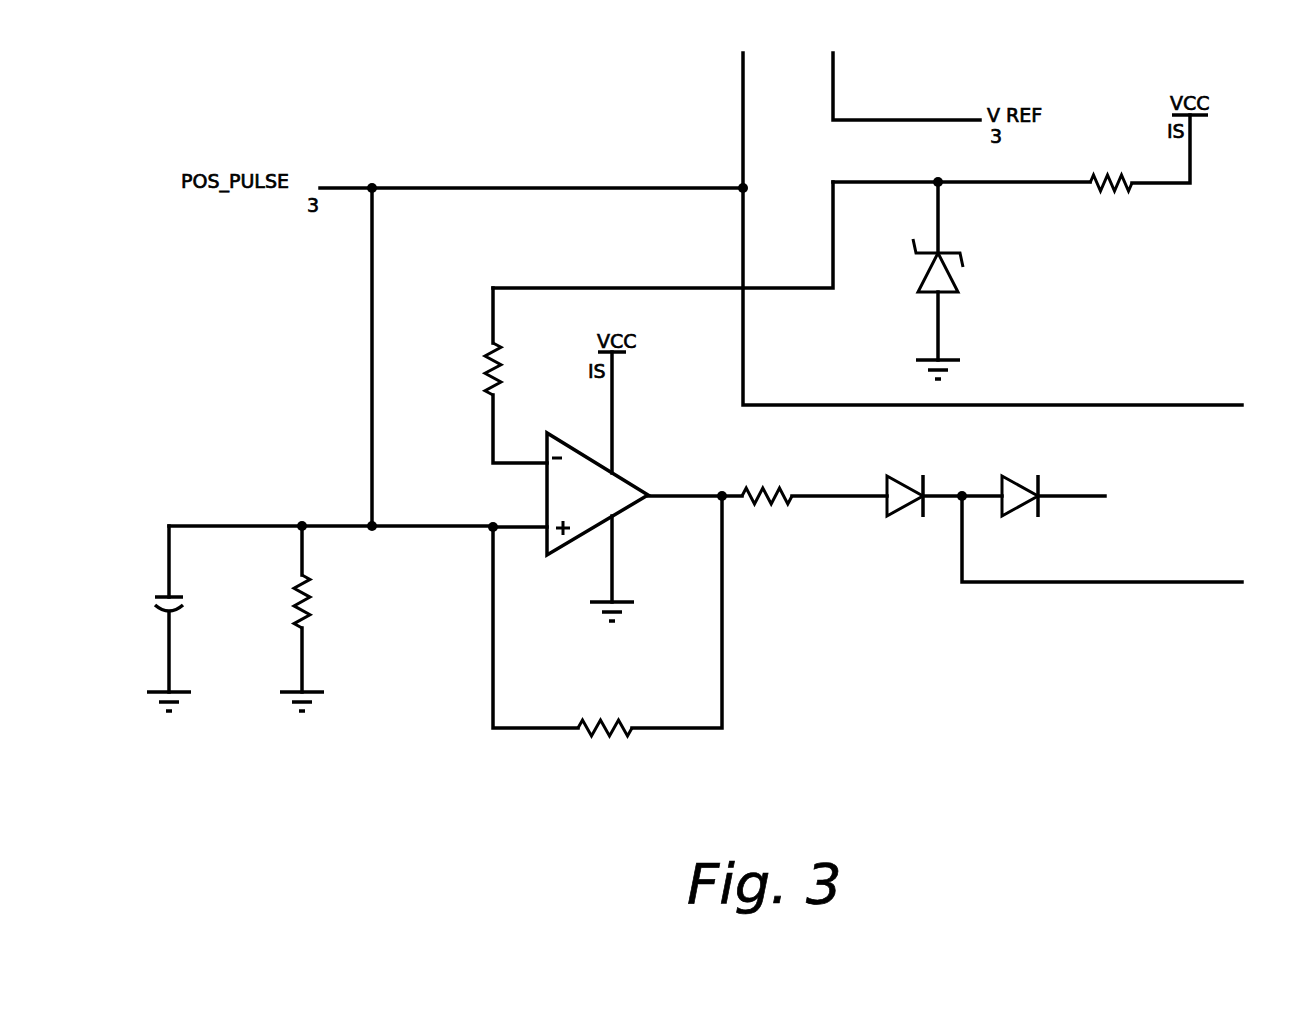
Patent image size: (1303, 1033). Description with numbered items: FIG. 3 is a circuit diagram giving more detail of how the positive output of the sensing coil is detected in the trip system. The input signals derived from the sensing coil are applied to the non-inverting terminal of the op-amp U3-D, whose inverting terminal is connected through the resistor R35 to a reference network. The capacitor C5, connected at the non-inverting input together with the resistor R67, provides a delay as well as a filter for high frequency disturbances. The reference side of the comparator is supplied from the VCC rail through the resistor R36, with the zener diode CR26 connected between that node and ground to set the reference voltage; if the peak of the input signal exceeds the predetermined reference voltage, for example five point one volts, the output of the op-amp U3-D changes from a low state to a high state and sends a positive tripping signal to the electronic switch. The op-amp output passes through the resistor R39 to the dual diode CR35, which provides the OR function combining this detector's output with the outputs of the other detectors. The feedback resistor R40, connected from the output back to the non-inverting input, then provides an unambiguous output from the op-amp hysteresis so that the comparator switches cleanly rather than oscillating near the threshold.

The op-amp U3-D is at (609, 487).
The resistor 10K R35 is at (528, 370).
The resistor 2K R36 is at (1115, 184).
The resistor 1K R39 is at (772, 500).
The resistor R40 is at (610, 772).
The resistor 75K R67 is at (339, 605).
The capacitor C5 is at (203, 605).
The zener diode BZX84C4V7 CR26 is at (997, 280).
The diode CR35 is at (962, 478).